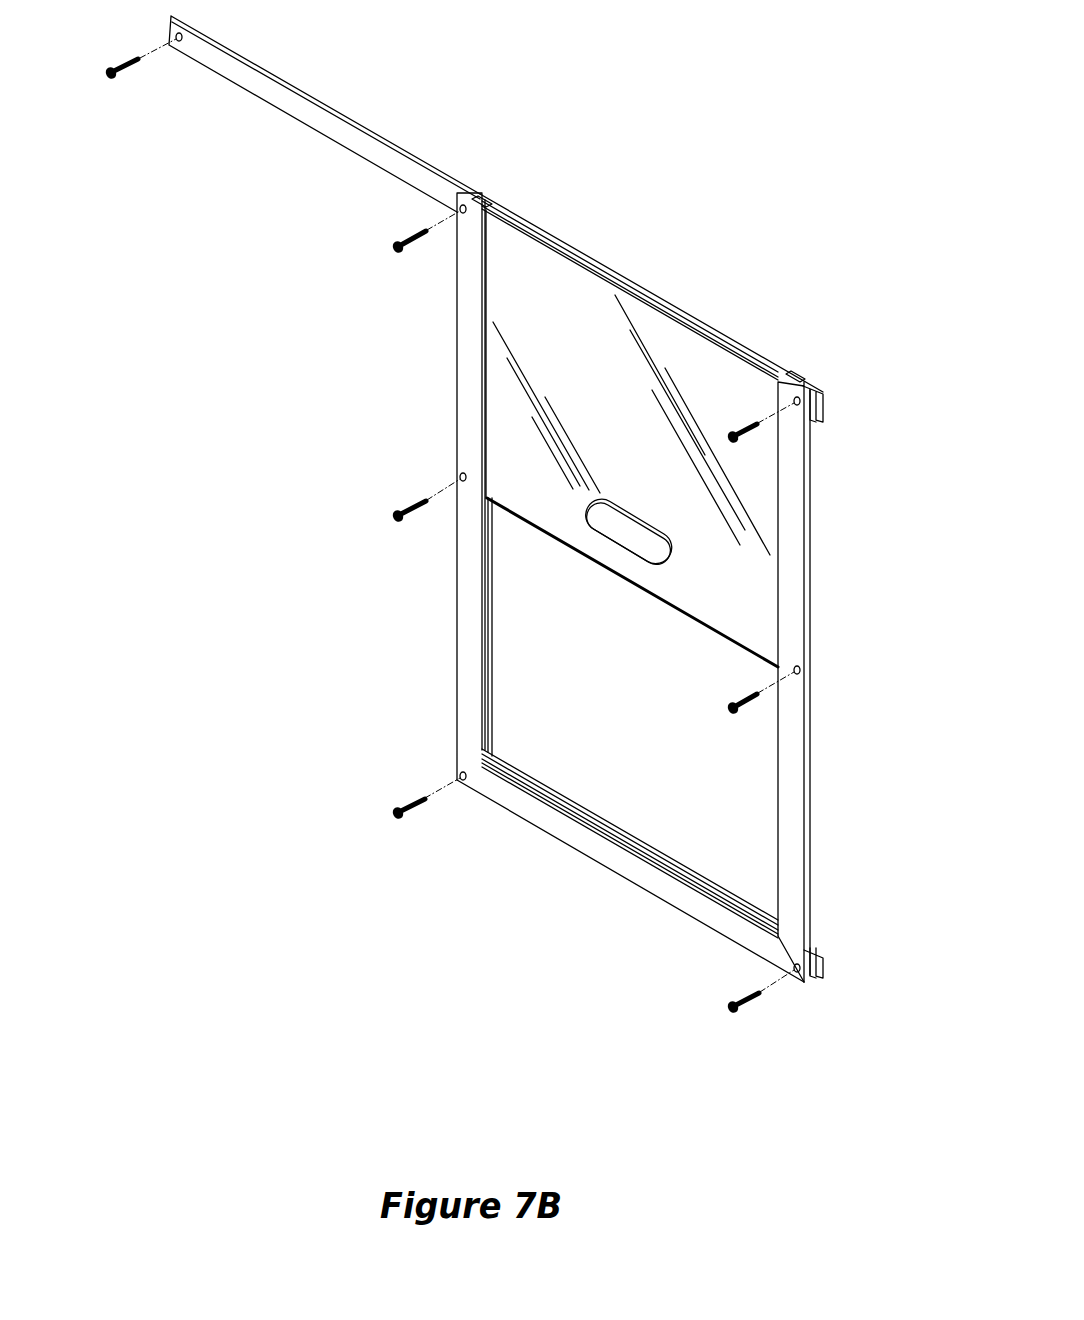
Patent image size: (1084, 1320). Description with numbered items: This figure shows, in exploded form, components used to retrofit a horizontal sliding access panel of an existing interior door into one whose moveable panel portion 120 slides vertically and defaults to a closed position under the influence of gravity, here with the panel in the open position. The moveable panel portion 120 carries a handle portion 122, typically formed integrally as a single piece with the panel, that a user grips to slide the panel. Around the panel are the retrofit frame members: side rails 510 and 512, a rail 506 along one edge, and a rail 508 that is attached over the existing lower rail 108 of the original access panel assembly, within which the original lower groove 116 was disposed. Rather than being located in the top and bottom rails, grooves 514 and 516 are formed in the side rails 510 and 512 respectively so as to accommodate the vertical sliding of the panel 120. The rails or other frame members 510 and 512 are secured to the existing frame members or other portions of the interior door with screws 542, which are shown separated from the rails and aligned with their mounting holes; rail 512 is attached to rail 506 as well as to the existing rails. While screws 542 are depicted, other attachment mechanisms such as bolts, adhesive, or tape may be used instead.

The lower rail 108 is at (825, 960).
The lower groove 116 is at (532, 795).
The moveable panel portion 120 is at (670, 350).
The handle portion 122 is at (612, 528).
The rail 506 is at (325, 102).
The rail 508 is at (640, 875).
The rail 510 is at (795, 568).
The rail 512 is at (463, 407).
The groove 514 is at (800, 375).
The groove 516 is at (480, 198).
The screws 542 is at (130, 70).